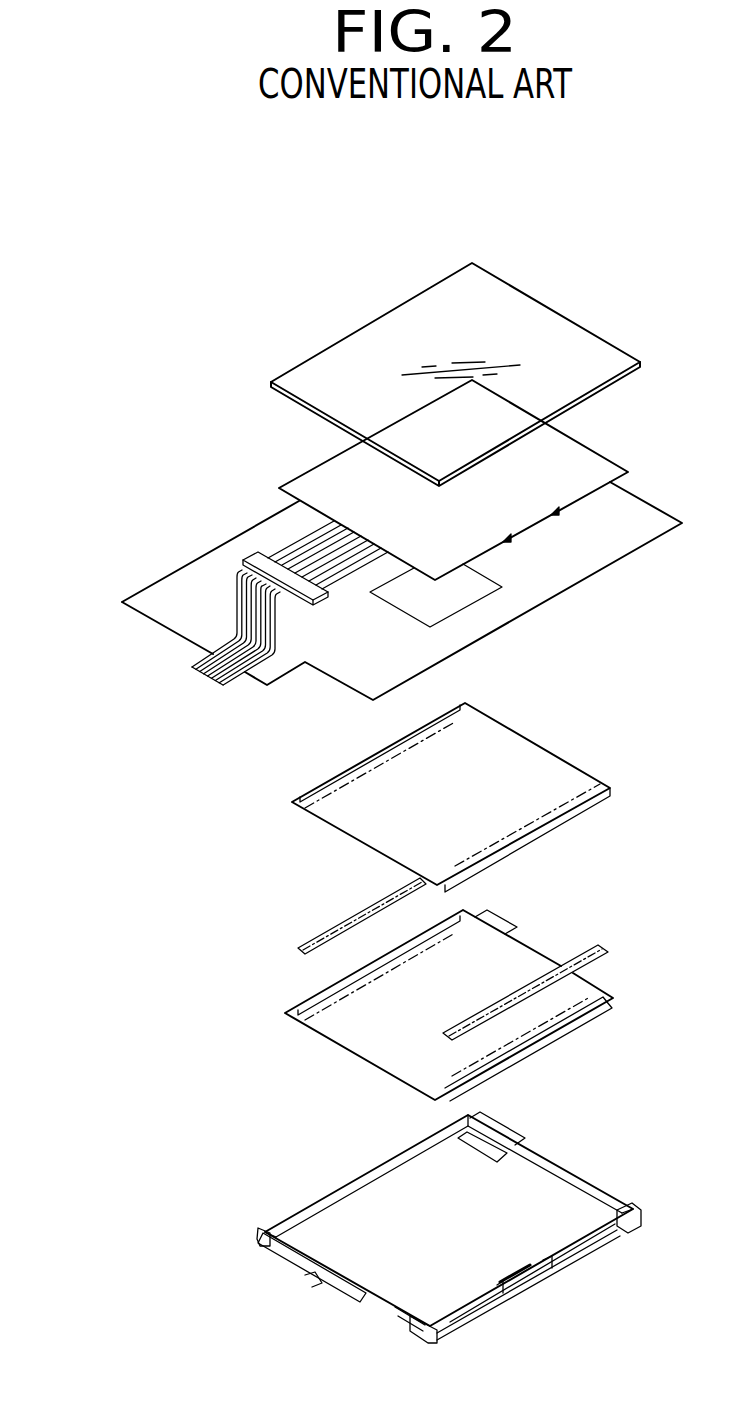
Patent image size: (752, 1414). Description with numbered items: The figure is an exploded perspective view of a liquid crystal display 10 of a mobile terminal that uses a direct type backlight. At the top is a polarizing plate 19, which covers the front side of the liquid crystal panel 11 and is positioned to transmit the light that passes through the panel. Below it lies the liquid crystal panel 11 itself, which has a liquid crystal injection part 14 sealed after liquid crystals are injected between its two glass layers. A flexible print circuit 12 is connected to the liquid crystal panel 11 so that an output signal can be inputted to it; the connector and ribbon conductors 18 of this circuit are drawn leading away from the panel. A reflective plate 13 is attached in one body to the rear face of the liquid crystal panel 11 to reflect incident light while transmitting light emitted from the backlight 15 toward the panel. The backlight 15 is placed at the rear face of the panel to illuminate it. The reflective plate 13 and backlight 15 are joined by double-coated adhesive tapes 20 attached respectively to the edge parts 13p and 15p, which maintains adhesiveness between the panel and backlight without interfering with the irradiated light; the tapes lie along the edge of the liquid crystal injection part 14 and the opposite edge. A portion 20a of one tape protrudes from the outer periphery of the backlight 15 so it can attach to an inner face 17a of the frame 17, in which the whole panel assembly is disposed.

The liquid crystal display 10 is at (143, 338).
The polarizing plate 19 is at (303, 380).
The liquid crystal panel 11 is at (323, 471).
The liquid crystal injection part 14 is at (510, 540).
The flexible print circuit 12 is at (168, 609).
The connector and ribbon conductors 18 is at (290, 603).
The reflective plate 13 is at (322, 794).
The part of the reflective plate 13p is at (346, 770).
The double-coated adhesive tape 20 is at (343, 924).
The backlight 15 is at (338, 1023).
The part of the backlight 15p is at (309, 1005).
The portion of the double-coated adhesive tape 20a is at (507, 1009).
The frame 17 is at (308, 1205).
The inner face of the frame 17a is at (528, 1273).